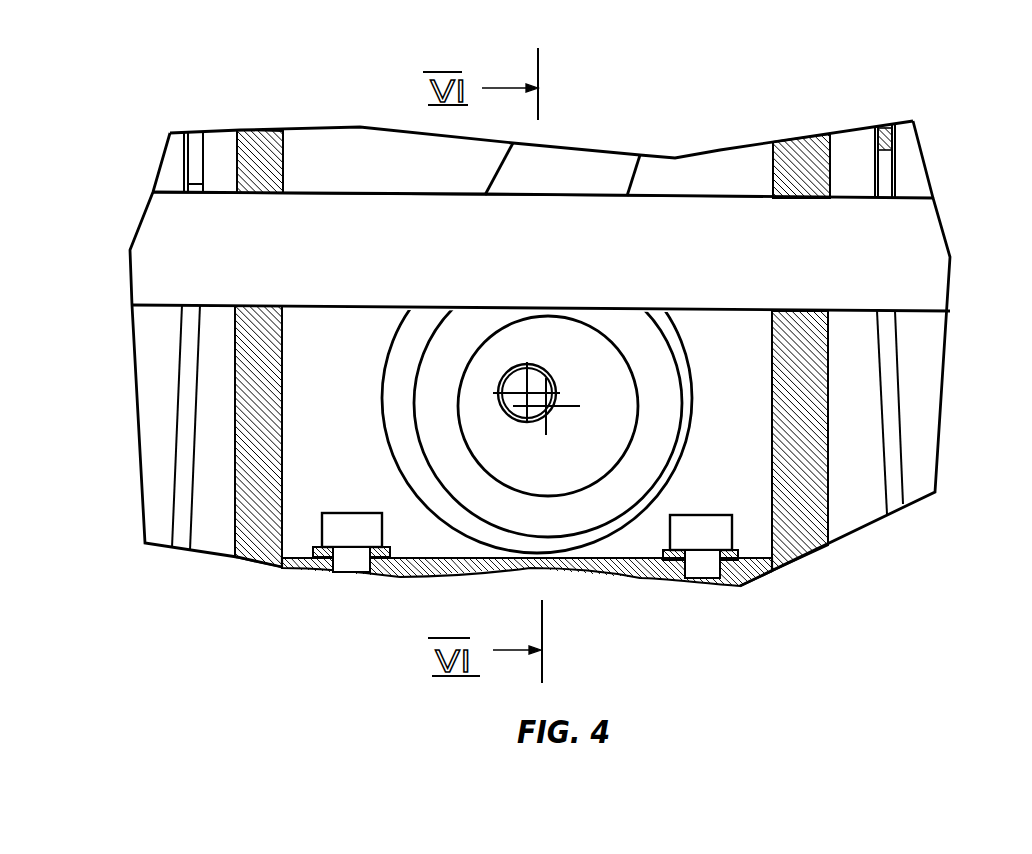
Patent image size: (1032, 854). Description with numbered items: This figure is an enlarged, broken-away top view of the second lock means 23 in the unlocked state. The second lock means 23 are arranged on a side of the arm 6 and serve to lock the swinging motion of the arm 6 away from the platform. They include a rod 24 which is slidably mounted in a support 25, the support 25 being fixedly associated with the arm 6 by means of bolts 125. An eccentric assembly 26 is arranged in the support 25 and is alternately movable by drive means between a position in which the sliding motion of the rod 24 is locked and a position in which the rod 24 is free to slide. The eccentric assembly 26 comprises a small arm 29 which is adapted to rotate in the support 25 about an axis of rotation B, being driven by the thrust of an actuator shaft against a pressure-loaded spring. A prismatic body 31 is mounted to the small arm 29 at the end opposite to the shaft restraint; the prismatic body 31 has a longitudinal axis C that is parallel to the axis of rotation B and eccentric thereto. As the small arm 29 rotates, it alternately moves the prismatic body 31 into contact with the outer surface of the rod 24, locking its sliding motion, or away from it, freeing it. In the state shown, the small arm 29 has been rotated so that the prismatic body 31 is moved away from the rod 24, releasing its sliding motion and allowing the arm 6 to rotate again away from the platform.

The arm 6 is at (410, 572).
The second lock means 23 is at (748, 118).
The rod 24 is at (903, 247).
The support 25 is at (340, 165).
The eccentric assembly 26 is at (699, 398).
The small arm 29 is at (585, 167).
The prismatic body 31 is at (597, 380).
The bolts 125 is at (355, 532).
The axis of rotation B is at (548, 406).
The longitudinal axis C is at (522, 393).